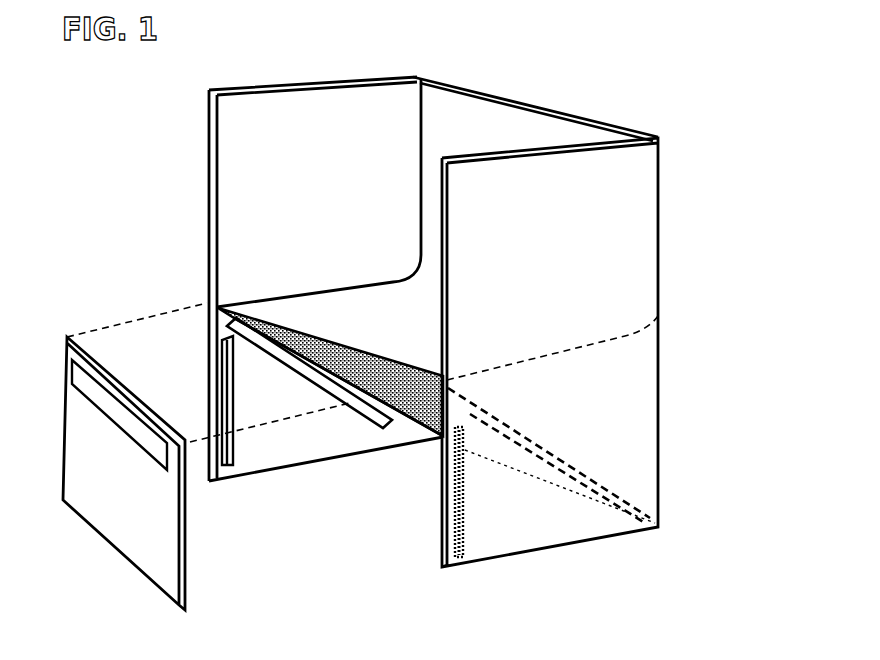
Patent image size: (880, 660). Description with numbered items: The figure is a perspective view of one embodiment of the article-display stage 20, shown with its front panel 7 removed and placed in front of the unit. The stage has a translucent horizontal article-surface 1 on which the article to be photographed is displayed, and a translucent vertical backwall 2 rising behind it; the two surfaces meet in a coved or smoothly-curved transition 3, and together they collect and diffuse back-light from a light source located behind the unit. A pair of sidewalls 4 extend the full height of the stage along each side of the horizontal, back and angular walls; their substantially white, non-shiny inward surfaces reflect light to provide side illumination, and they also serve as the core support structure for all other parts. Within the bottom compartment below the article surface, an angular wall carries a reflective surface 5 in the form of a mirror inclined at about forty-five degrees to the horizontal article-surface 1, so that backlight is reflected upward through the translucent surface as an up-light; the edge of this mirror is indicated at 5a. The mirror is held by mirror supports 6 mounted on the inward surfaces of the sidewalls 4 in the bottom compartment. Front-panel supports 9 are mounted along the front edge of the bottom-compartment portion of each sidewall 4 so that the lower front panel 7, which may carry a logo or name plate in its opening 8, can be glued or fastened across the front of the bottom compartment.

The horizontal article-surface 1 is at (316, 309).
The backwall 2 is at (525, 131).
The coved or smoothly-curved transition 3 is at (420, 275).
The sidewalls 4 is at (248, 178).
The reflective surface 5 is at (509, 414).
The tray edge 5a is at (424, 437).
The mirror supports 6 is at (323, 380).
The front panel 7 is at (155, 556).
The dispensing opening 8 is at (100, 400).
The front-panel supports 9 is at (236, 438).
The article-display stage 20 is at (672, 107).